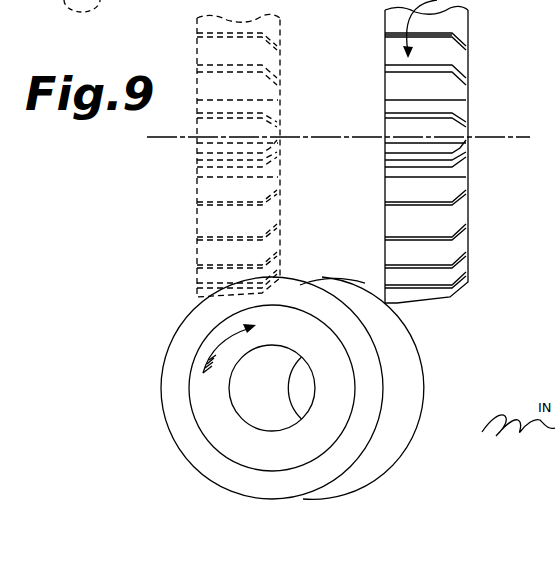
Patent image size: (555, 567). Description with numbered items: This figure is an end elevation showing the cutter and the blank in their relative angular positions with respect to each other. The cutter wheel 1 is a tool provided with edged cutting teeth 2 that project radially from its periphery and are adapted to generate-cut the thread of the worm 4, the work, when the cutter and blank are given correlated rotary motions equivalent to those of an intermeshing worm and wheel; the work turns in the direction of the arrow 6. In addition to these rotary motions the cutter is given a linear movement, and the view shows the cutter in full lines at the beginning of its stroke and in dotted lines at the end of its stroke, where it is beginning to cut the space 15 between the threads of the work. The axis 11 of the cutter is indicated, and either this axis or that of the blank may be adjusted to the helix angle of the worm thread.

The cutter wheel 1 is at (470, 81).
The cutting teeth 2 is at (393, 35).
The worm 4 is at (413, 347).
The arrow indicating direction of work rotation 6 is at (484, 0).
The axis of the cutter 11 is at (180, 140).
The space between the threads 15 is at (339, 272).